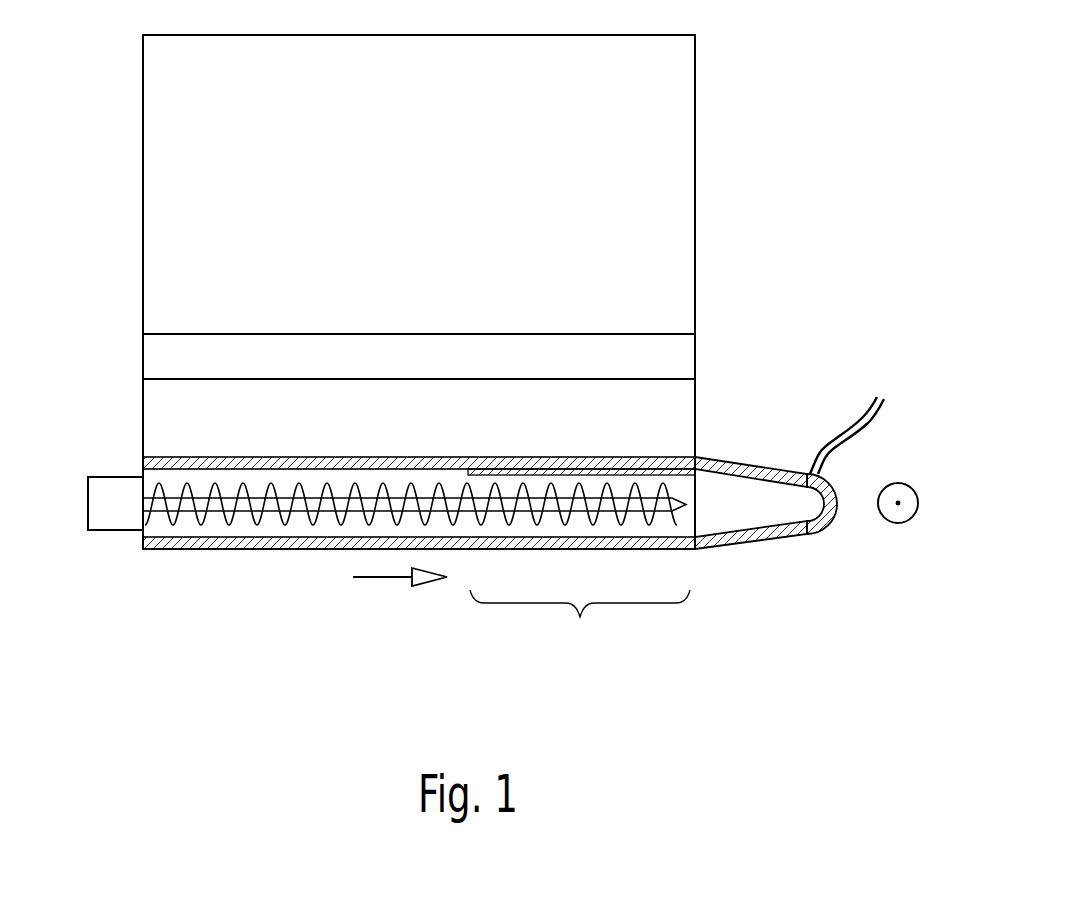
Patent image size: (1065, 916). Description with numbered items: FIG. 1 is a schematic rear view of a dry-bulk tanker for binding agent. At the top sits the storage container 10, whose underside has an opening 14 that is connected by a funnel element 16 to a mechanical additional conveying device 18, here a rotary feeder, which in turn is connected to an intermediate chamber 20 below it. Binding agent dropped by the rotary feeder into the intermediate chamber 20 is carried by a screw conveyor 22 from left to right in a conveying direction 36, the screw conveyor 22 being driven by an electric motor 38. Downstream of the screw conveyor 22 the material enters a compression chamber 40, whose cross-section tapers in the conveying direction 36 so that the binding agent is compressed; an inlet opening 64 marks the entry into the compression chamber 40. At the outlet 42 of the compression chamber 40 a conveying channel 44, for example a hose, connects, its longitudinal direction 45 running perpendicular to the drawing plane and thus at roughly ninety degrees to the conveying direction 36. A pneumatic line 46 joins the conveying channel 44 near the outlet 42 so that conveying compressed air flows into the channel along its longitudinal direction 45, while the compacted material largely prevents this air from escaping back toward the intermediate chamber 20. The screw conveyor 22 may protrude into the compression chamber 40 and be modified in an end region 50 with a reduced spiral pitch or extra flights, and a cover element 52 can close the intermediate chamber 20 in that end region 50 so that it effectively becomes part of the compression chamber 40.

The storage container 10 is at (190, 93).
The opening 14 is at (432, 447).
The funnel element 16 is at (190, 358).
The additional conveying device 18 is at (190, 422).
The intermediate chamber 20 is at (271, 517).
The screw conveyor 22 is at (208, 505).
The conveying direction 36 is at (392, 580).
The electric motor 38 is at (103, 515).
The compression chamber 40 is at (732, 501).
The outlet 42 is at (770, 495).
The conveying channel 44 is at (805, 504).
The longitudinal direction 45 is at (900, 514).
The pneumatic line 46 is at (882, 406).
The end region 50 is at (580, 630).
The cover element 52 is at (580, 472).
The inlet opening 64 is at (695, 518).